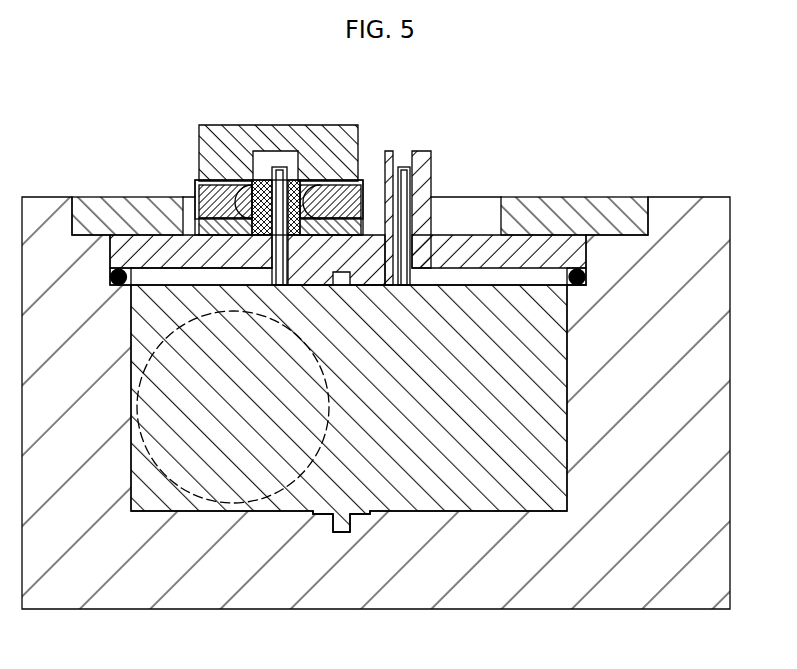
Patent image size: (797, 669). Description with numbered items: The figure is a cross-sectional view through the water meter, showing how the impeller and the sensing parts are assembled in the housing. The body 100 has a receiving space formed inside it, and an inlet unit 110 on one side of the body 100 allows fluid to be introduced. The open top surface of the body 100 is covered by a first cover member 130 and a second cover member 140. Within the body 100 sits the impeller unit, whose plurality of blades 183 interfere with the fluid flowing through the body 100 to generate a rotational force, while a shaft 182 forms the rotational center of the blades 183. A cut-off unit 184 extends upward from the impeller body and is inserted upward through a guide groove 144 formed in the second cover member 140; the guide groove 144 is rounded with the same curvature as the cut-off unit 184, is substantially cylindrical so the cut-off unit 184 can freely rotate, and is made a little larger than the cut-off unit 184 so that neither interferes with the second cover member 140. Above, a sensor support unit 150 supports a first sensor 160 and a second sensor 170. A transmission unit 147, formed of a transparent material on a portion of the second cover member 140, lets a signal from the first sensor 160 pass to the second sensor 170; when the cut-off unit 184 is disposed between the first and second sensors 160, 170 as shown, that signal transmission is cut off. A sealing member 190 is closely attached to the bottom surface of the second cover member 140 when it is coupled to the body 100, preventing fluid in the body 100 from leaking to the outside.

The body 100 is at (660, 210).
The inlet unit 110 is at (213, 503).
The first cover member 130 is at (532, 210).
The second cover member 140 is at (477, 242).
The guide groove 144 is at (386, 172).
The transmission unit 147 is at (297, 179).
The sensor support unit 150 is at (205, 138).
The first sensor 160 is at (215, 195).
The second sensor 170 is at (330, 197).
The shaft 182 is at (342, 523).
The blades 183 is at (407, 493).
The cut-off unit 184 is at (407, 205).
The sealing member 190 is at (118, 266).